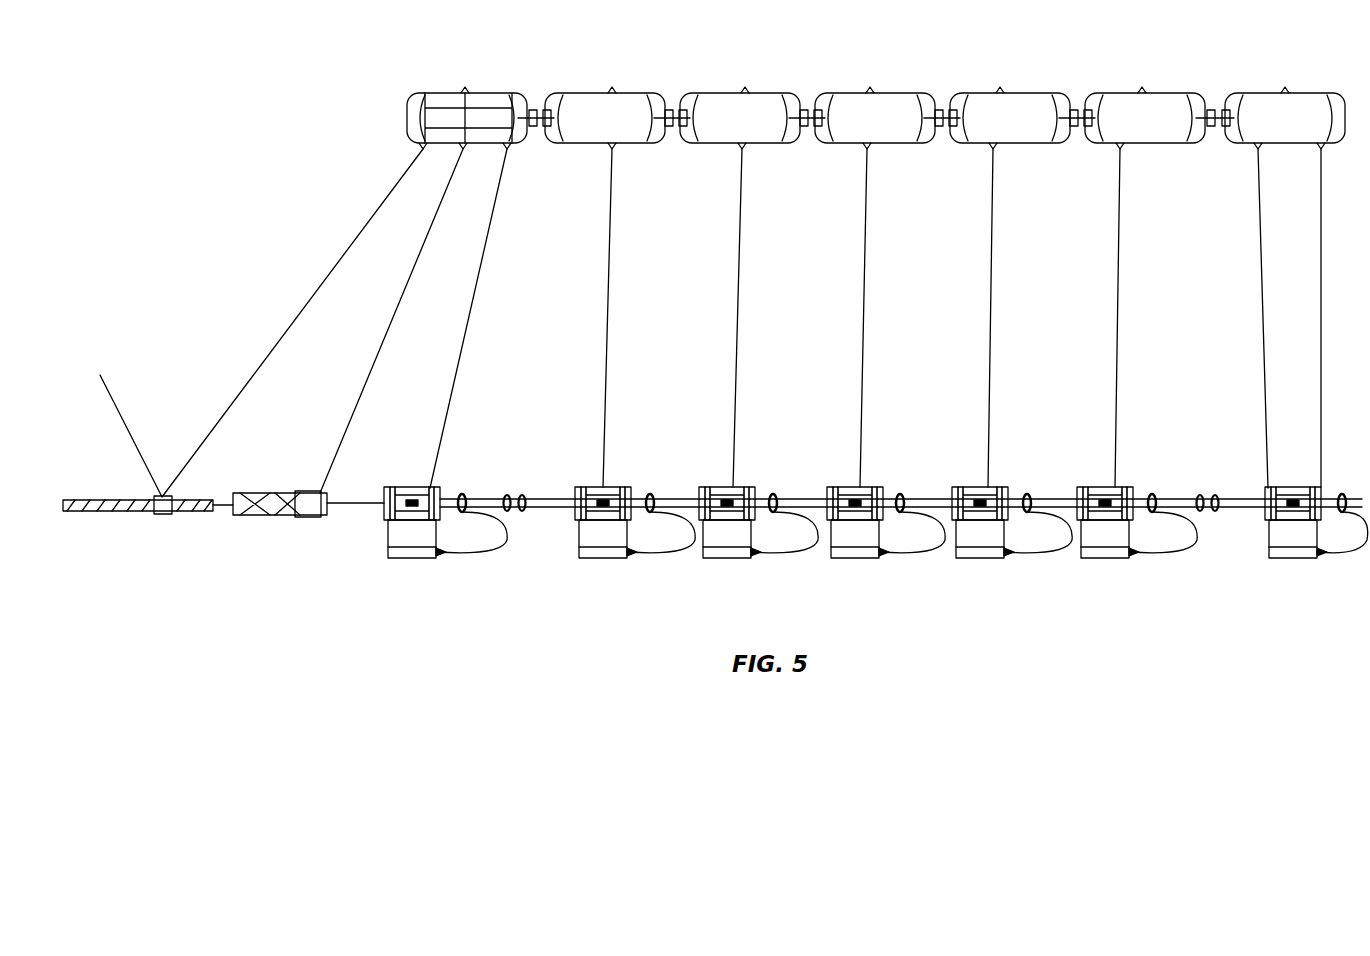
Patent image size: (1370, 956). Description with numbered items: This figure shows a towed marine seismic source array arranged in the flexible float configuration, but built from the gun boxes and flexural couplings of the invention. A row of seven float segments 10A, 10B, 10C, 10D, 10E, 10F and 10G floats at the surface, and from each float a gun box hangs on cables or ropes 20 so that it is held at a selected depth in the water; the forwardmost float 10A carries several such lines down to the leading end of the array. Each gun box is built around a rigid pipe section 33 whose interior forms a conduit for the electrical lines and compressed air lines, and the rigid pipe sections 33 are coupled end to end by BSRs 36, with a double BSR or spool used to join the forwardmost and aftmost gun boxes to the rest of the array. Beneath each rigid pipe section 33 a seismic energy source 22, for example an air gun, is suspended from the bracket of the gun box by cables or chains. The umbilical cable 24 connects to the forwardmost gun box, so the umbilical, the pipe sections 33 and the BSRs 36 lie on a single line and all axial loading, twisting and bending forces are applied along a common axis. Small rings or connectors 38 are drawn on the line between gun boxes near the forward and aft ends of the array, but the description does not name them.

The float segment 10A is at (465, 92).
The float segment 10B is at (612, 92).
The float segment 10C is at (745, 92).
The float segment 10D is at (870, 92).
The float segment 10E is at (1000, 92).
The float segment 10F is at (1142, 92).
The float segment 10G is at (1285, 92).
The cables or ropes 20 is at (476, 333).
The seismic energy source 22 is at (404, 558).
The umbilical cable 24 is at (150, 512).
The rigid pipe section 33 is at (462, 493).
The BSR 36 is at (484, 514).
The ring 38 is at (520, 494).